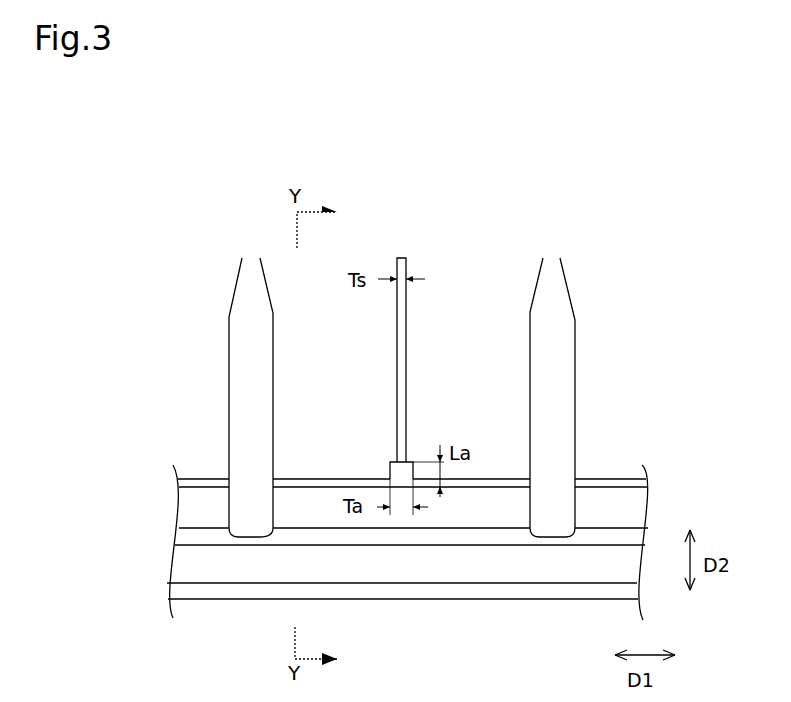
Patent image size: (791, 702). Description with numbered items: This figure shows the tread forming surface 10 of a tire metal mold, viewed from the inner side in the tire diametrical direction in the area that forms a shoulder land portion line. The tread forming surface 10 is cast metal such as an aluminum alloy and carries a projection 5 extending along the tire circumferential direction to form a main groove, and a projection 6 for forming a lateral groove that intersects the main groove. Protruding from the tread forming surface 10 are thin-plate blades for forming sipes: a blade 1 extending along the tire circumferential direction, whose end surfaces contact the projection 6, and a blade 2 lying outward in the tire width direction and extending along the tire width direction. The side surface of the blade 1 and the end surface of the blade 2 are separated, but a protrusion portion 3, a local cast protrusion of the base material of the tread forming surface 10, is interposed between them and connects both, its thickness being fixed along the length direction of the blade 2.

The blade 1 is at (303, 479).
The blade 2 is at (397, 345).
The protrusion portion 3 is at (390, 470).
The projection 5 is at (207, 600).
The projection 6 is at (229, 392).
The tread forming surface 10 is at (500, 668).